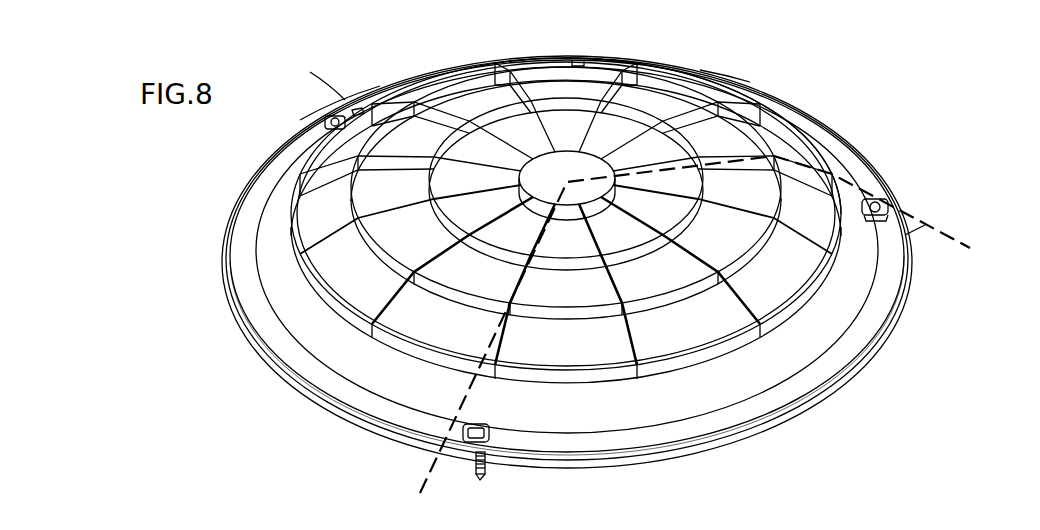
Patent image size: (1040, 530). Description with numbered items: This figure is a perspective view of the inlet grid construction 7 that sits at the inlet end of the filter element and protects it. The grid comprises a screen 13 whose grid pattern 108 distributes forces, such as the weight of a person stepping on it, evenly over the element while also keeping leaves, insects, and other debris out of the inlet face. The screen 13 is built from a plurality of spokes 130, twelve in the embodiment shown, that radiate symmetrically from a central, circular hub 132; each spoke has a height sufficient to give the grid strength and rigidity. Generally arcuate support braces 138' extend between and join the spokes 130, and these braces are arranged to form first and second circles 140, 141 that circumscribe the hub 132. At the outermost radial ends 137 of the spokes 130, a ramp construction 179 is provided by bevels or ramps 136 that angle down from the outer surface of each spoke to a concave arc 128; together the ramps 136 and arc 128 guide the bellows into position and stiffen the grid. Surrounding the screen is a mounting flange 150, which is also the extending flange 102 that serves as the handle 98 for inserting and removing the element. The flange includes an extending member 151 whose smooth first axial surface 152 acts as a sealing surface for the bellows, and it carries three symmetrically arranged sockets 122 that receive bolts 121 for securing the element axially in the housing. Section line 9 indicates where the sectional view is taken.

The inlet grid construction 7 is at (328, 58).
The section line 9- 9 is at (427, 483).
The screen 13 is at (725, 78).
The handle 98 is at (915, 198).
The extending flange 102 is at (897, 287).
The grid pattern 108 is at (583, 52).
The bolt 121 is at (487, 472).
The socket 122 is at (877, 207).
The arc 128 is at (770, 368).
The spoke 130 is at (667, 122).
The central hub 132 is at (597, 150).
The ramp 136 is at (337, 160).
The outermost radial end 137 is at (693, 110).
The support brace 138' is at (565, 96).
The first circle 140 is at (460, 72).
The second circle 141 is at (440, 225).
The mounting flange 150 is at (218, 257).
The extending member 151 is at (878, 322).
The first axial surface 152 is at (848, 353).
The ramp construction 179 is at (343, 92).